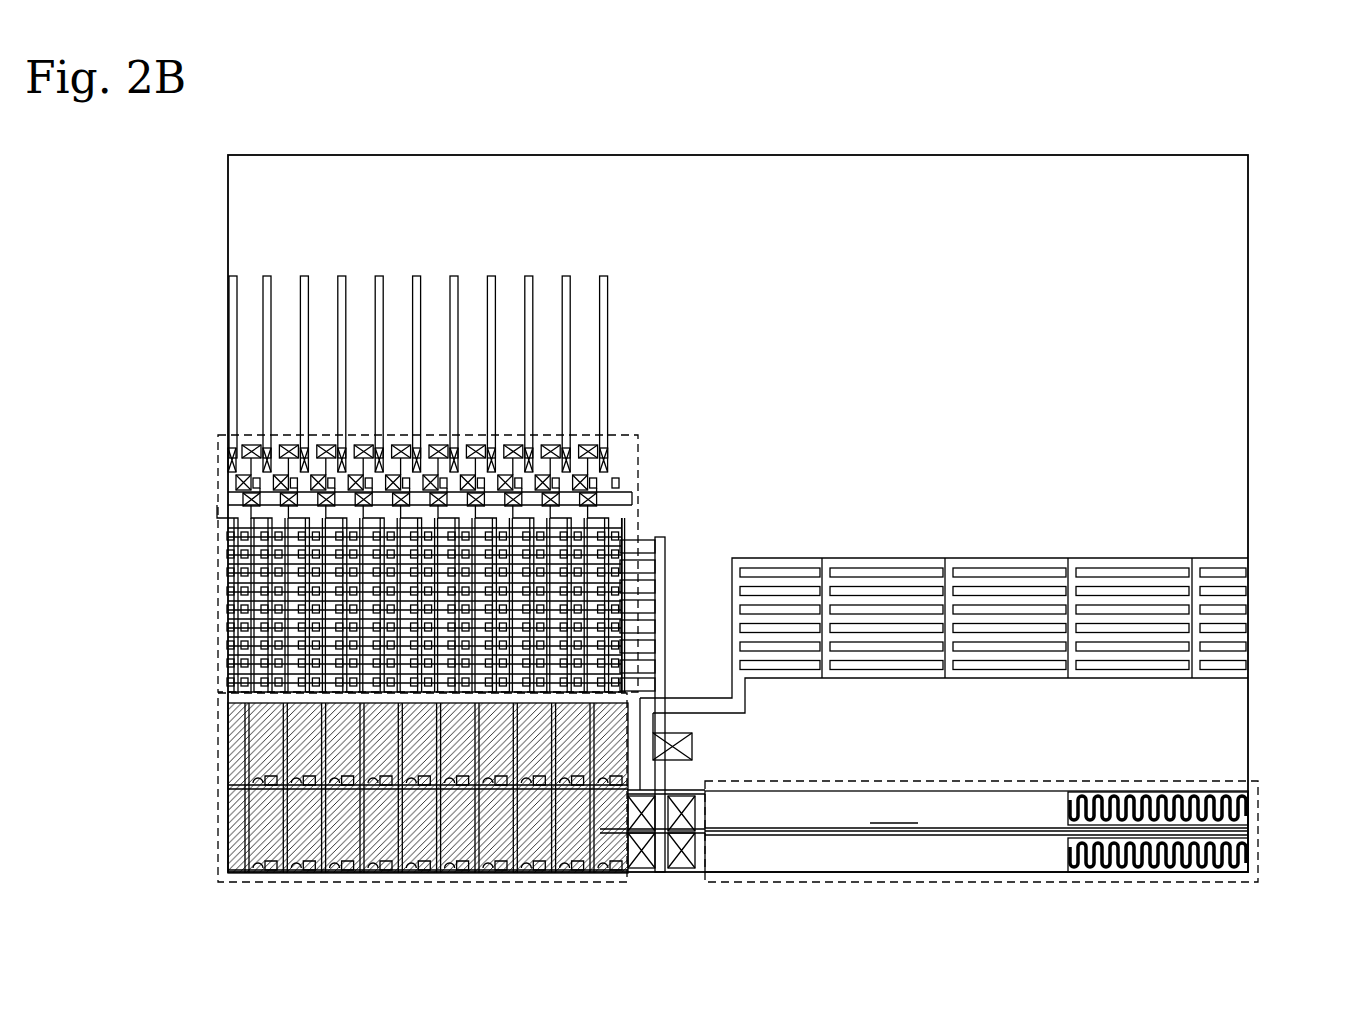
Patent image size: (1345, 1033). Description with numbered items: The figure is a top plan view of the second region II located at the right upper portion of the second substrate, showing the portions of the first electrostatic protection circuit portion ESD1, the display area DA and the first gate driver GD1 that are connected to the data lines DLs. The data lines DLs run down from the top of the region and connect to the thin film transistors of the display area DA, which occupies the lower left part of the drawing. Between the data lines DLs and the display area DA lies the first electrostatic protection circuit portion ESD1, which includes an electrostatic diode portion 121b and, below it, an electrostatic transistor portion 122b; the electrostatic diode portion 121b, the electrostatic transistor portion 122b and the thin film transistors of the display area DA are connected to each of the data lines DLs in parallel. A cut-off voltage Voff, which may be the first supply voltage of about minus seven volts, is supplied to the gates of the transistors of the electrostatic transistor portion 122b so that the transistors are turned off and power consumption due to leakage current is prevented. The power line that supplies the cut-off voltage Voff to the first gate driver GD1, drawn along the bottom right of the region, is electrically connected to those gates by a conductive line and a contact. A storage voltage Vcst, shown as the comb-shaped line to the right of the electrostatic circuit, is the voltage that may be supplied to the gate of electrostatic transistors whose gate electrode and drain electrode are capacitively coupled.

The second region II is at (225, 240).
The data lines DLs is at (610, 266).
The first electrostatic protection circuit portion ESD1 is at (381, 564).
The electrostatic diode portion 121b is at (210, 445).
The electrostatic transistor portion 122b is at (218, 515).
The display area DA is at (218, 751).
The cut-off voltage Voff is at (662, 537).
The storage voltage Vcst is at (882, 558).
The first gate driver GD1 is at (1258, 835).